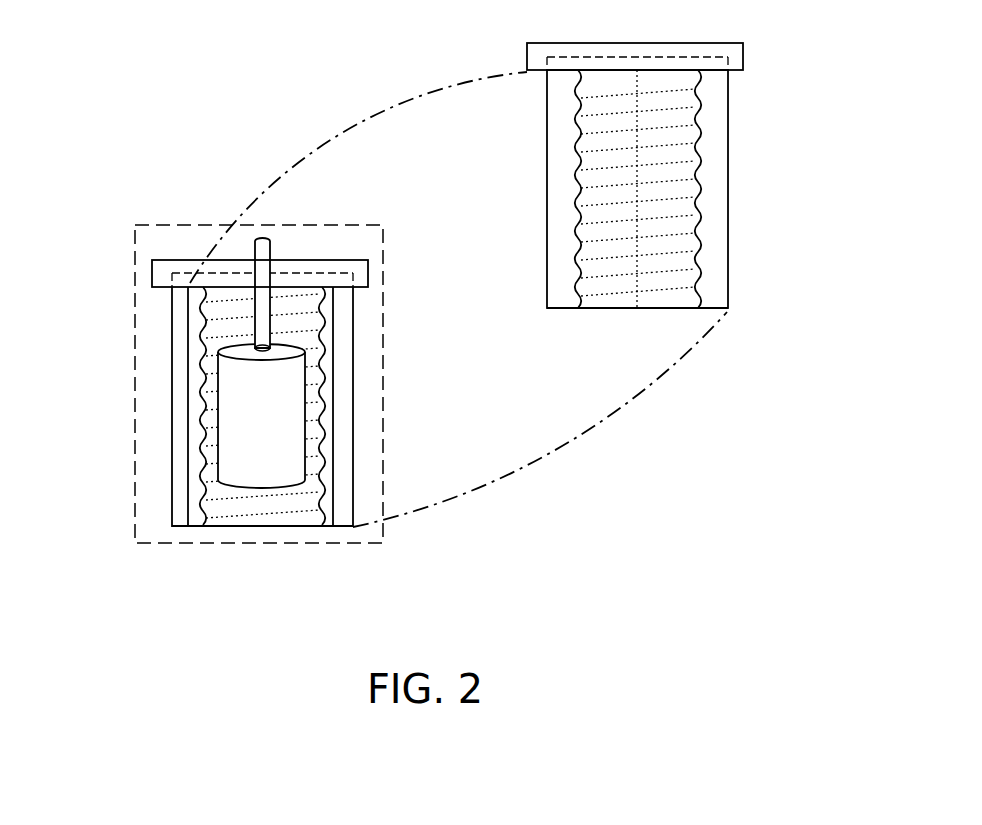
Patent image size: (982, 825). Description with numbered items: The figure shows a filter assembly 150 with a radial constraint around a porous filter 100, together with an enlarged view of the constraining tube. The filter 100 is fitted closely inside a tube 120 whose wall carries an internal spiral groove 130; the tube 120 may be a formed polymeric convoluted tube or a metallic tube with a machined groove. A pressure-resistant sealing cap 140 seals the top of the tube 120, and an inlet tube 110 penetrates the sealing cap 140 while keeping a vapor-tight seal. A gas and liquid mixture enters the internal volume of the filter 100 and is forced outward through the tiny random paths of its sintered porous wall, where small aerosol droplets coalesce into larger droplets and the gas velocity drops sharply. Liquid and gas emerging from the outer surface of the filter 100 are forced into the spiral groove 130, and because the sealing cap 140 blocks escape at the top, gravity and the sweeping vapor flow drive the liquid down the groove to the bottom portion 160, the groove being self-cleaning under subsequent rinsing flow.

The filter 100 is at (265, 463).
The inlet tube 110 is at (265, 237).
The tube 120 is at (343, 390).
The spiral groove 130 is at (223, 507).
The sealing cap 140 is at (363, 270).
The filter assembly 150 is at (135, 385).
The bottom portion 160 is at (588, 310).